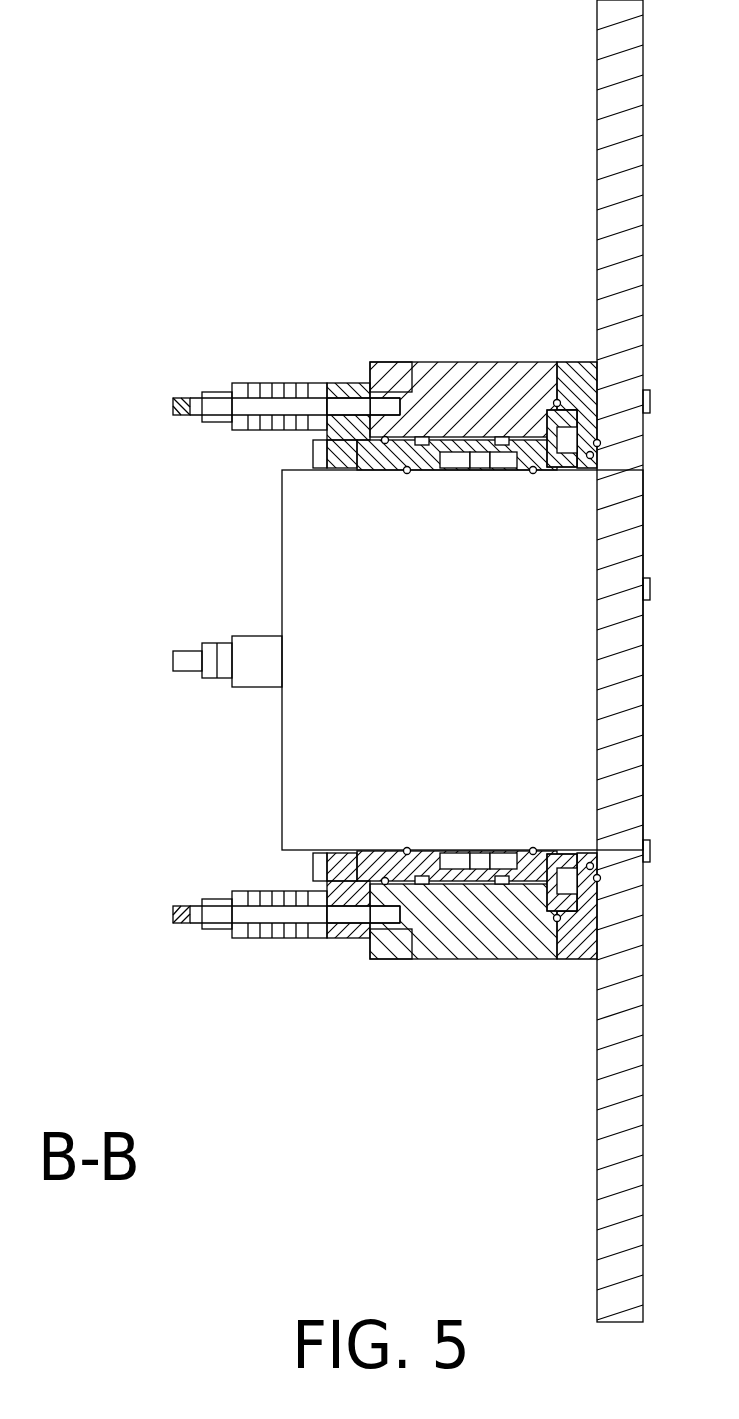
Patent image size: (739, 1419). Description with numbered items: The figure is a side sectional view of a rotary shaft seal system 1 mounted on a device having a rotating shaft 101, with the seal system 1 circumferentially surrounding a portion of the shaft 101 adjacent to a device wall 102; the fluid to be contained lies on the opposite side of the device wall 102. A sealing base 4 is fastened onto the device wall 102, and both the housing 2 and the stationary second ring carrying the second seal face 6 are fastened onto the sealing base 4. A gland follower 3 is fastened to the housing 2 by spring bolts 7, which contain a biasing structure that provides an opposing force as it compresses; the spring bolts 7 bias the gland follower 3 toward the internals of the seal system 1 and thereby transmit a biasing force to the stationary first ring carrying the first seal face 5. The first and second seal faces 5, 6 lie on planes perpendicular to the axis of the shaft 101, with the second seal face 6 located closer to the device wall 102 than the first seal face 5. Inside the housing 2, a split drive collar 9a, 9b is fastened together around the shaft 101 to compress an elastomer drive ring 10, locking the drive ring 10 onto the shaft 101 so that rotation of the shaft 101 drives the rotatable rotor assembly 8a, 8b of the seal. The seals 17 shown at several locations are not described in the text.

The rotary shaft seal system 1 is at (205, 180).
The housing 2 is at (377, 362).
The gland follower 3 is at (335, 390).
The sealing base 4 is at (586, 362).
The first seal face 5 is at (362, 462).
The second seal face 6 is at (571, 464).
The spring bolts 7 is at (230, 386).
The rotor assembly 8a is at (422, 446).
The rotor assembly 8b is at (502, 446).
The drive collar 9a is at (450, 470).
The drive collar 9b is at (507, 470).
The drive ring 10 is at (475, 470).
The seal 17 is at (557, 403).
The rotating shaft 101 is at (487, 663).
The device wall 102 is at (597, 53).